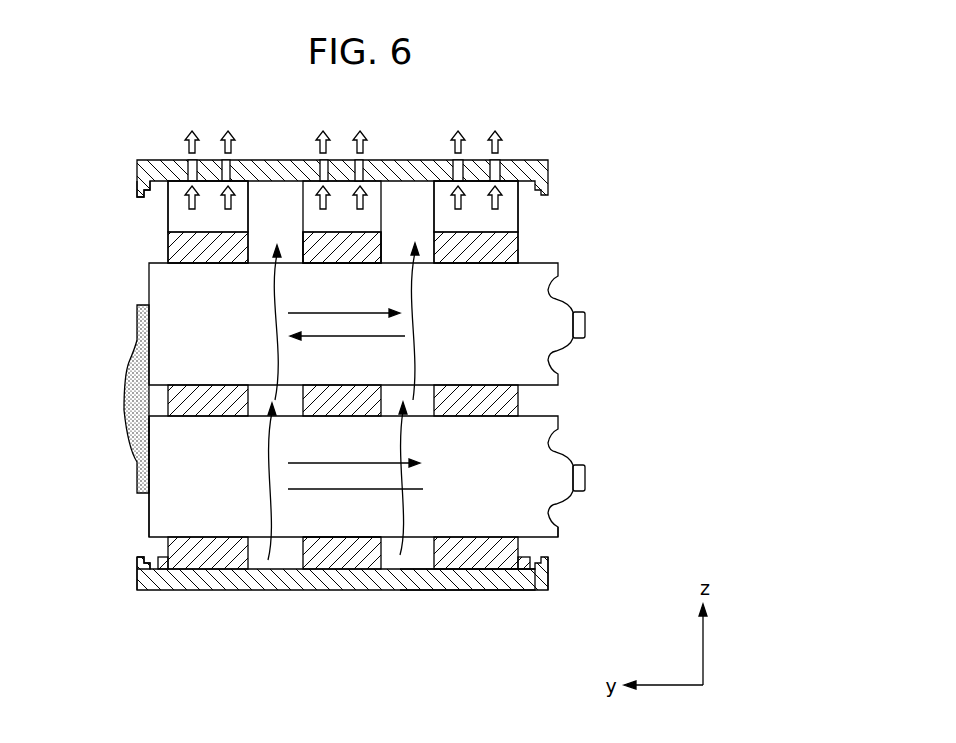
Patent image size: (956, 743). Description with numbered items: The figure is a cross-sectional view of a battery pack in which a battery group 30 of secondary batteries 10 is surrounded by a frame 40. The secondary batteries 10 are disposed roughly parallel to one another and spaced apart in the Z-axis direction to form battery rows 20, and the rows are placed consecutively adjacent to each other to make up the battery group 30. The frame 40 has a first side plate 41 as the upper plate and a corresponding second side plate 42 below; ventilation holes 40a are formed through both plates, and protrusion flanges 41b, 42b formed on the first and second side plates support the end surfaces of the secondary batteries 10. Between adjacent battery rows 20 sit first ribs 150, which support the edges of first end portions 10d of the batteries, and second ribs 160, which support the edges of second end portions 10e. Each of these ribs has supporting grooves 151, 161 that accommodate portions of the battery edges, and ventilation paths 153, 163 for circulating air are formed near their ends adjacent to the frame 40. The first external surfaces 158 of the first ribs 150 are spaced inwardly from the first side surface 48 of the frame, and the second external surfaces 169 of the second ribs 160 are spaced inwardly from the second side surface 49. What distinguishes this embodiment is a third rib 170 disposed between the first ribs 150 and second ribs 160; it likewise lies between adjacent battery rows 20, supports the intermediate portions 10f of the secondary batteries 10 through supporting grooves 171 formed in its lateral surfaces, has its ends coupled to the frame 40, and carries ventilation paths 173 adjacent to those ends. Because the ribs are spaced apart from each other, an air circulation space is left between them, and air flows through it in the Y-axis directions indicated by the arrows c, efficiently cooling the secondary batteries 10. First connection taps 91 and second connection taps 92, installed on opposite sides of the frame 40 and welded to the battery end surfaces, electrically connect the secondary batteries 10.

The secondary battery 10 is at (148, 291).
The first end portion 10d is at (160, 513).
The second end portion 10e is at (513, 513).
The intermediate portion 10f is at (327, 519).
The battery row 20 is at (346, 399).
The battery group 30 is at (594, 296).
The frame 40 is at (293, 594).
The ventilation hole 40a is at (190, 168).
The first side plate 41 is at (258, 160).
The protrusion flange 41b is at (136, 194).
The second side plate 42 is at (465, 586).
The protrusion flange 42b is at (138, 552).
The first side surface 48 is at (139, 588).
The second side surface 49 is at (549, 590).
The first connection tap 91 is at (130, 415).
The second connection tap 92 is at (588, 325).
The first rib 150 is at (125, 224).
The supporting groove 151 is at (168, 243).
The ventilation path 153 is at (168, 220).
The first external surface 158 is at (164, 573).
The second rib 160 is at (559, 222).
The supporting groove 161 is at (520, 261).
The ventilation path 163 is at (493, 232).
The second external surface 169 is at (526, 570).
The third rib 170 is at (343, 338).
The supporting groove 171 is at (325, 270).
The ventilation path 173 is at (367, 243).
The arrow c is at (342, 466).